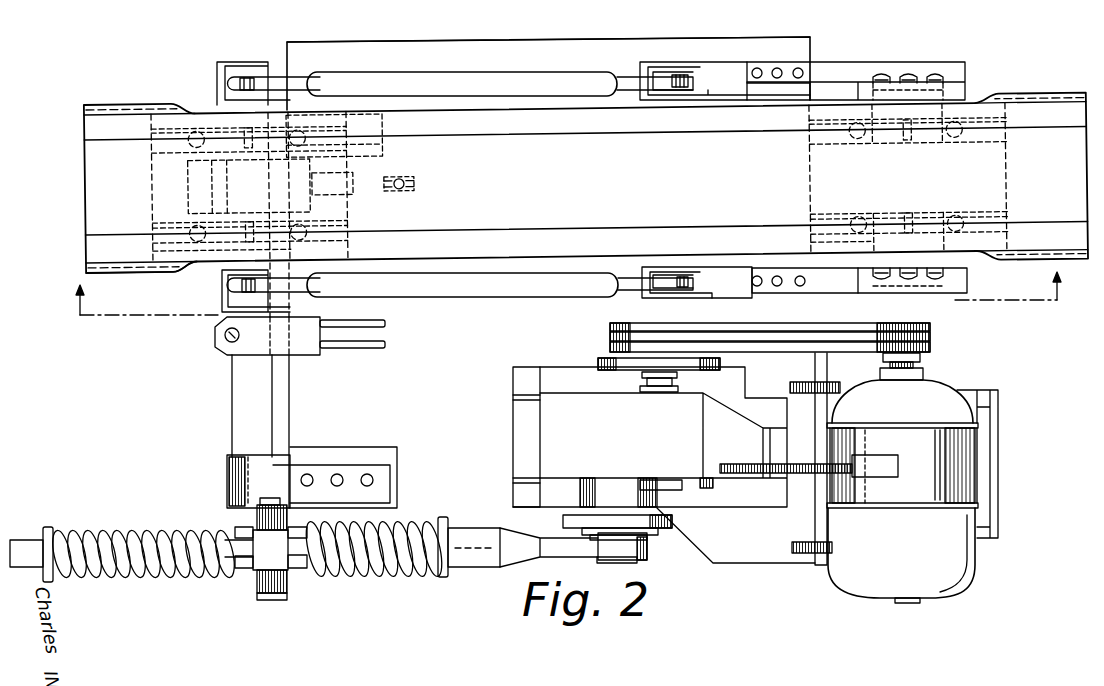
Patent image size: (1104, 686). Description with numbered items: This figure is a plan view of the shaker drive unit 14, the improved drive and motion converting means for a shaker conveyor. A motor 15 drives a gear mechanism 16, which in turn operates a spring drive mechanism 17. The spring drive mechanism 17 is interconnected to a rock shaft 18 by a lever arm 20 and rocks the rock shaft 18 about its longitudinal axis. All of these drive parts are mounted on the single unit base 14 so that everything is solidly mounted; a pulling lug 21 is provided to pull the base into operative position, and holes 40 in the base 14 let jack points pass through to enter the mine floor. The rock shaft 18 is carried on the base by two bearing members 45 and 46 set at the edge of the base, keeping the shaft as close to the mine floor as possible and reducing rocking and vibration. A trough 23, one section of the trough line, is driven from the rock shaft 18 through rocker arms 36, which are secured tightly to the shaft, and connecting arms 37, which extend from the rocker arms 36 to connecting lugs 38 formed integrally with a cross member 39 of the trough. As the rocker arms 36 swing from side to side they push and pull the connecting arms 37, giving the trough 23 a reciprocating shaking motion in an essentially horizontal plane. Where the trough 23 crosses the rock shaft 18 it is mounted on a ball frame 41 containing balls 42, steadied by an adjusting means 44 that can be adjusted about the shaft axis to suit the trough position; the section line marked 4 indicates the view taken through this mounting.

The section line 4- 4 is at (567, 286).
The unit base 14 is at (641, 37).
The motor 15 is at (947, 381).
The gear mechanism 16 is at (560, 392).
The spring drive mechanism 17 is at (368, 575).
The rock shaft 18 is at (232, 388).
The lever arm 20 is at (257, 572).
The pulling lug 21 is at (222, 337).
The trough 23 is at (85, 189).
The rocker arms 36 is at (257, 48).
The connecting arms 37 is at (508, 72).
The connecting lug 38 is at (715, 63).
The cross member 39 is at (738, 100).
The holes 40 is at (304, 52).
The ball frame 41 is at (187, 263).
The balls 42 is at (152, 150).
The adjusting means 44 is at (398, 178).
The bearing member 45 is at (227, 470).
The bearing member 46 is at (215, 122).